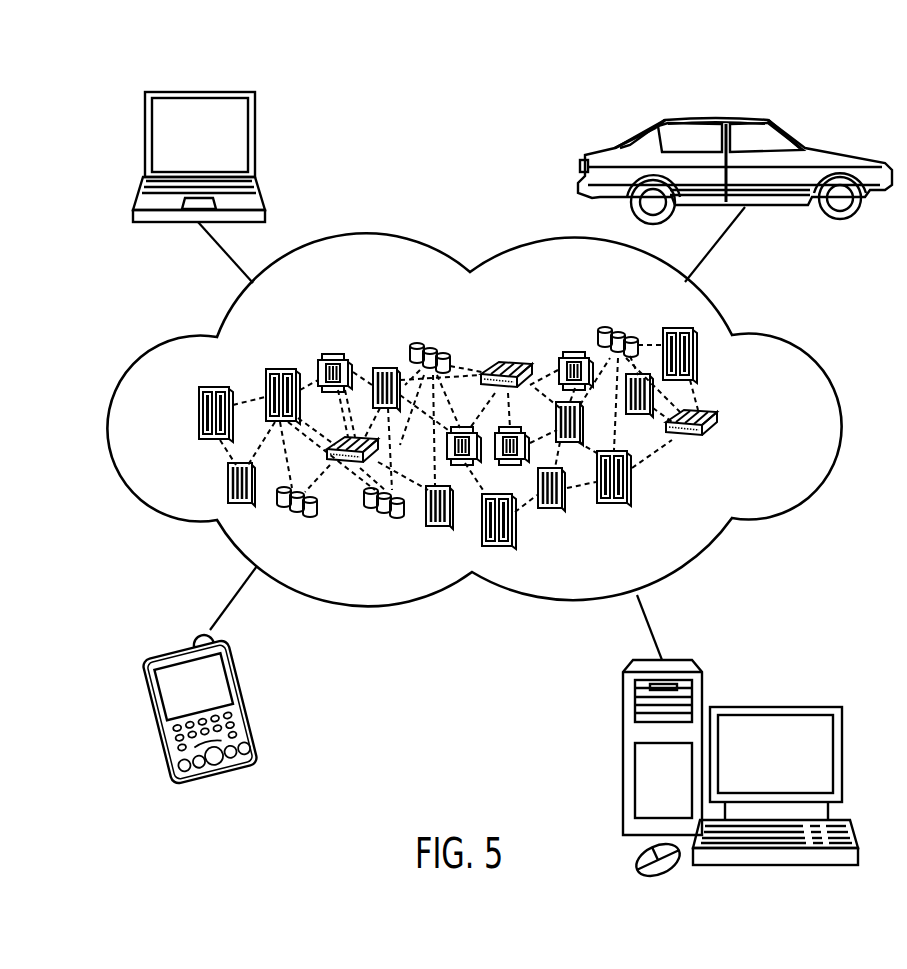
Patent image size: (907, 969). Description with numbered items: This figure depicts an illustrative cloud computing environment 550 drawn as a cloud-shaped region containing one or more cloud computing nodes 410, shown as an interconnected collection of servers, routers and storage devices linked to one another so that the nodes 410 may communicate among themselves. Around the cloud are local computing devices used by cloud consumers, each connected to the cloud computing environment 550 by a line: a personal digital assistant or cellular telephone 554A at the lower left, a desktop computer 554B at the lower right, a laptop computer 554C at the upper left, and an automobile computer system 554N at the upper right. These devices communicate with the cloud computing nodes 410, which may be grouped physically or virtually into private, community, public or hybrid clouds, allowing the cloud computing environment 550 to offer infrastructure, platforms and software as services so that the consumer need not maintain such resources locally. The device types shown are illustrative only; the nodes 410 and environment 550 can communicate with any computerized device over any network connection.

The laptop computer 554C is at (198, 92).
The automobile computer system 554N is at (718, 118).
The cloud computing environment 550 is at (788, 340).
The cloud computing nodes 410 is at (734, 428).
The personal digital assistant (PDA) or cellular telephone 554A is at (181, 645).
The desktop computer 554B is at (775, 705).